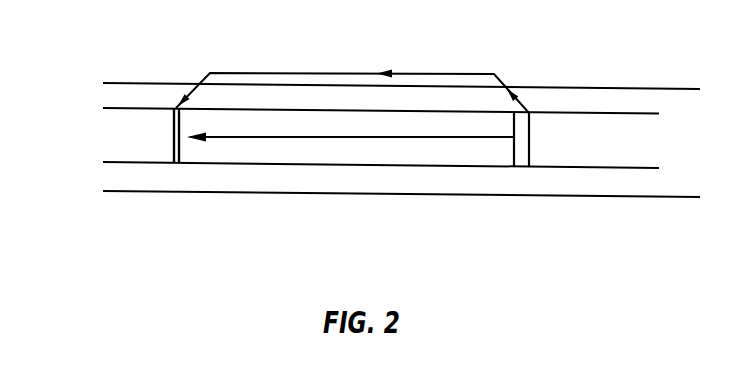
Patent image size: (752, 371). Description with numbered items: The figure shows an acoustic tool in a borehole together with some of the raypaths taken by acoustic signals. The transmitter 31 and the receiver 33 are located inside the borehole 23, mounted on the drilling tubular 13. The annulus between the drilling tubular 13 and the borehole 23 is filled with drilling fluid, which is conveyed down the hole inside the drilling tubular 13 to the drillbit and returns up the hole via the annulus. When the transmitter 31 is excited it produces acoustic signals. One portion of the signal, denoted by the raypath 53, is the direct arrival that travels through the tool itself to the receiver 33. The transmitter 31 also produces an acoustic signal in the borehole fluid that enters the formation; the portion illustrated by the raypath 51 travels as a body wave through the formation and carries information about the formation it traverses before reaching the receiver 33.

The drilling tubular 13 is at (343, 209).
The borehole 23 is at (401, 223).
The receiver 33 is at (147, 183).
The transmitter 31 is at (551, 175).
The raypath 51 is at (352, 68).
The raypath 53 is at (350, 186).